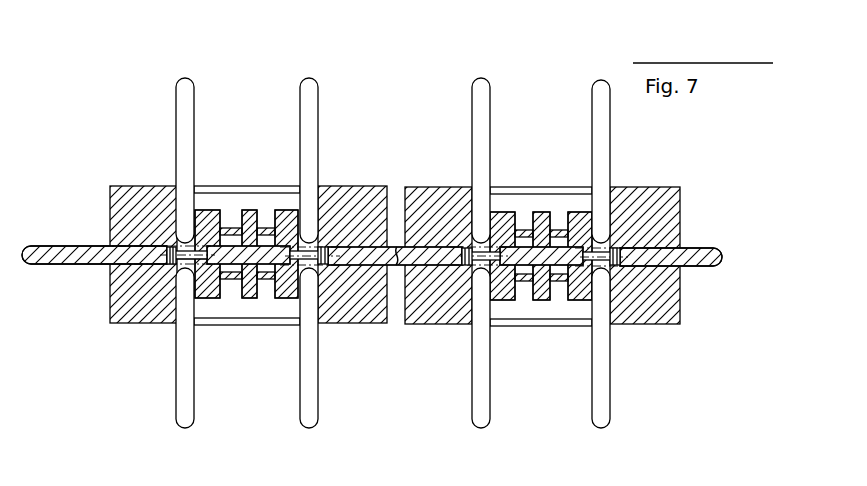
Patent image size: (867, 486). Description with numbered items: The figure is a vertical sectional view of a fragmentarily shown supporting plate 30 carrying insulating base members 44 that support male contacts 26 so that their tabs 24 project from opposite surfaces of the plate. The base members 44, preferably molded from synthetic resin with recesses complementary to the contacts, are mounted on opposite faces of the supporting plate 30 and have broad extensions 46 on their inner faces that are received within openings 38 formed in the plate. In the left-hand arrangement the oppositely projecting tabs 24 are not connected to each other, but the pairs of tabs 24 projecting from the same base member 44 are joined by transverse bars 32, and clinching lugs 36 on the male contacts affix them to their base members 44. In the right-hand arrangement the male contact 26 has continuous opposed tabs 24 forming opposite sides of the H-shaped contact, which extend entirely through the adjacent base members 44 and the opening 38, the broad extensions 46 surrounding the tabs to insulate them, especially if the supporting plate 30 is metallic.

The tabs 24 is at (185, 103).
The male contacts 26 is at (250, 185).
The supporting plate 30 is at (62, 248).
The transverse bars 32 is at (238, 196).
The clinching lugs 36 is at (225, 205).
The openings 38 is at (175, 268).
The insulating base members 44 is at (127, 188).
The broad extensions 46 is at (172, 246).